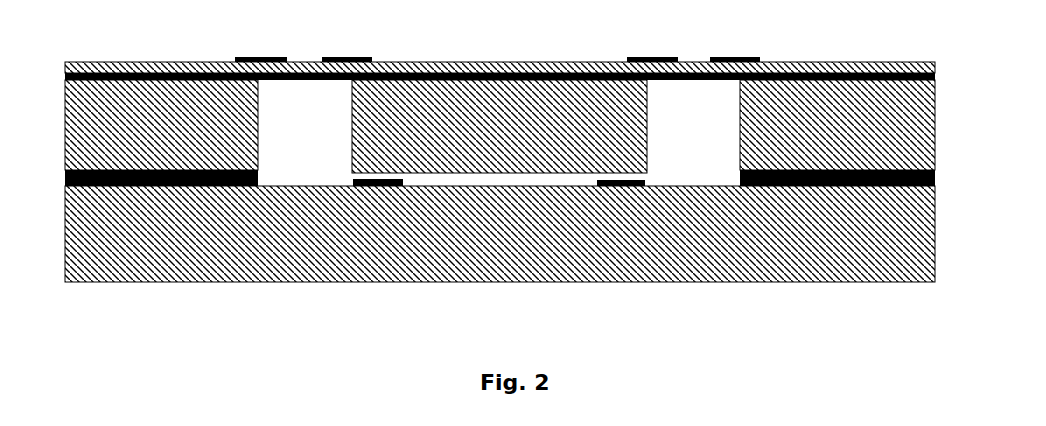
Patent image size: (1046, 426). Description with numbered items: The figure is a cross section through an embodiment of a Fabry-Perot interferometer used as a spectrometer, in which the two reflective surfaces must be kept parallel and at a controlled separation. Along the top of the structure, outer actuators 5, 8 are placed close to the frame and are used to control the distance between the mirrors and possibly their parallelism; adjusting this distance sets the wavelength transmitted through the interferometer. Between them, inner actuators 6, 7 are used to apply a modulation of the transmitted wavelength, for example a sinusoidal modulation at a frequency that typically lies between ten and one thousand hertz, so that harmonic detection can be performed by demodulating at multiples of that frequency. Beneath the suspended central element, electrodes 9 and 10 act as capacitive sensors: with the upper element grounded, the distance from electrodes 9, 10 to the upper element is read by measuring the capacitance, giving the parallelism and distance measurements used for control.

The outer actuator 5 is at (261, 43).
The inner actuator 6 is at (347, 44).
The inner actuator 7 is at (652, 43).
The outer actuator 8 is at (735, 43).
The electrode 9 is at (372, 186).
The electrode 10 is at (613, 186).